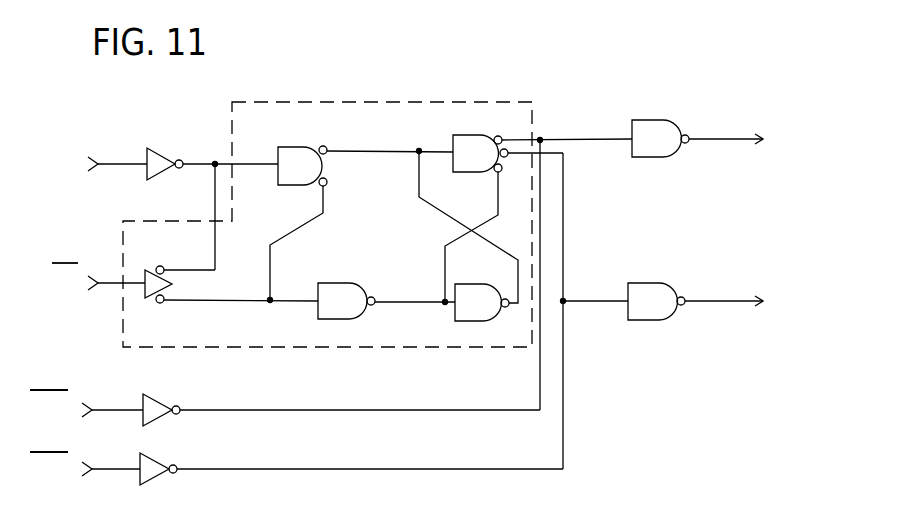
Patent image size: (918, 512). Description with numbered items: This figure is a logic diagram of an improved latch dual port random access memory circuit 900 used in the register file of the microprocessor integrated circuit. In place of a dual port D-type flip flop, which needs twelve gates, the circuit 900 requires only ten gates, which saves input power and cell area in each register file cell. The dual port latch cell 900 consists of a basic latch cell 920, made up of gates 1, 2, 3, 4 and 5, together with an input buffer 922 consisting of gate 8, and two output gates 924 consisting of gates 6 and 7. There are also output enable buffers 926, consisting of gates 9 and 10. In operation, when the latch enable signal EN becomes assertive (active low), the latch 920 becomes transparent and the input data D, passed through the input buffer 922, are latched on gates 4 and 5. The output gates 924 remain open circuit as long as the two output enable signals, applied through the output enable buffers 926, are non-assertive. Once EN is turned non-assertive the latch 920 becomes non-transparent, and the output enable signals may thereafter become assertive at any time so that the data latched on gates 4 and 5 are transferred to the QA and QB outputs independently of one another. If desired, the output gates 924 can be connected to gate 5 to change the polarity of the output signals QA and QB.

The gate 1 is at (147, 296).
The gate 2 is at (346, 301).
The gate 3 is at (302, 166).
The gate 4 is at (480, 153).
The gate 5 is at (482, 302).
The gate 6 is at (660, 138).
The gate 7 is at (656, 301).
The gate 8 is at (156, 170).
The gate 9 is at (158, 393).
The gate 10 is at (150, 482).
The latch dual port random access memory circuit 900 is at (420, 390).
The basic latch cell 920 is at (426, 102).
The input buffer 922 is at (150, 147).
The output gates 924 is at (663, 158).
The output enable buffers 926 is at (157, 423).